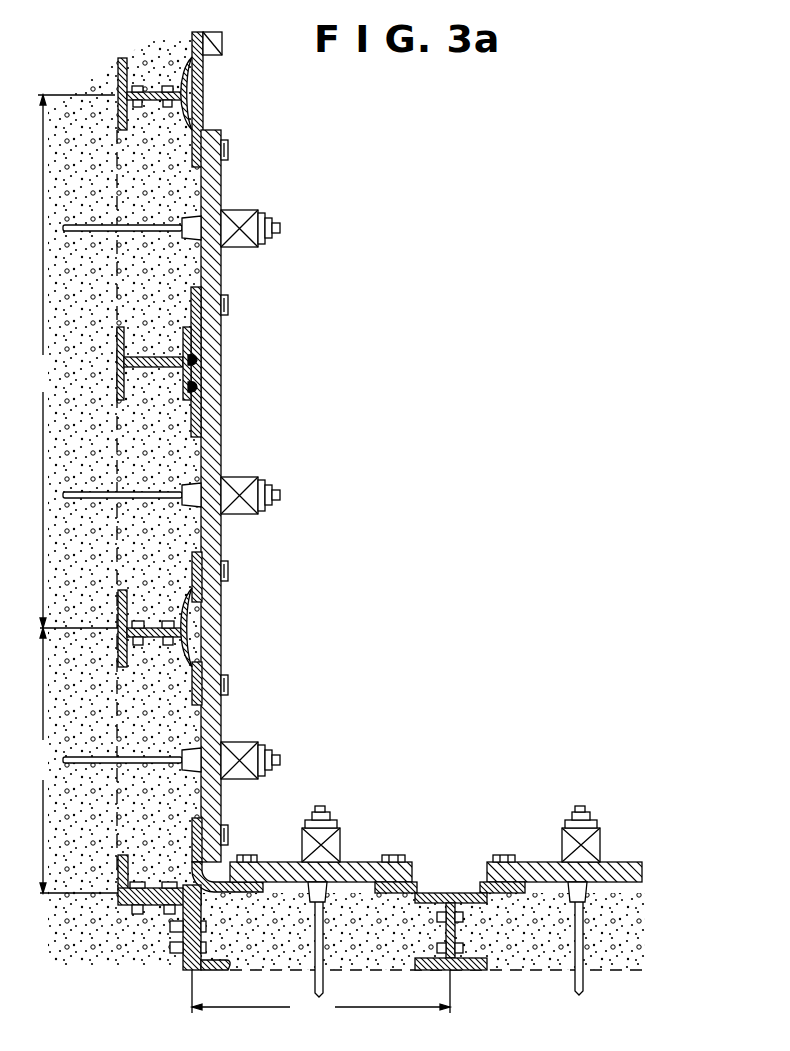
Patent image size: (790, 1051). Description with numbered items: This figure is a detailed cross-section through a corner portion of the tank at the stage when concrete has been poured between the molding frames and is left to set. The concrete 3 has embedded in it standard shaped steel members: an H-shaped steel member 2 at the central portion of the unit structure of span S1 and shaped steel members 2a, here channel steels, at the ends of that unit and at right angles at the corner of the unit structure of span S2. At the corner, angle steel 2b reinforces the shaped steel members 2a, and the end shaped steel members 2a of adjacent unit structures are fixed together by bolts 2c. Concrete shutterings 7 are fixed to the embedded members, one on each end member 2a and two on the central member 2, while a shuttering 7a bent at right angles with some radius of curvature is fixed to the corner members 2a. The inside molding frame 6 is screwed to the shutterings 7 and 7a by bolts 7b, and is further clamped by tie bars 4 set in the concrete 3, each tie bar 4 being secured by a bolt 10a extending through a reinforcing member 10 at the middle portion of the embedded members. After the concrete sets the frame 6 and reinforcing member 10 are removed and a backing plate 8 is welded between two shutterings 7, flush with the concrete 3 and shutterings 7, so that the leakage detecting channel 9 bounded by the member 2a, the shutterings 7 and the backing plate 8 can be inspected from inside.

The shaped steel member 2 is at (146, 368).
The shaped steel member 2a is at (118, 106).
The angle steel 2b is at (131, 912).
The bolts 2c is at (166, 108).
The concrete 3 is at (70, 190).
The tie bar 4 is at (95, 233).
The inside molding frame 6 is at (214, 182).
The concrete shuttering 7 is at (191, 297).
The shuttering 7a is at (192, 833).
The bolts 7b is at (229, 150).
The backing plate 8 is at (198, 360).
The leakage detecting channel 9 is at (197, 387).
The reinforcing member 10 is at (245, 248).
The bolt 10a is at (264, 213).
The span S1 is at (73, 361).
The span S2 is at (240, 826).